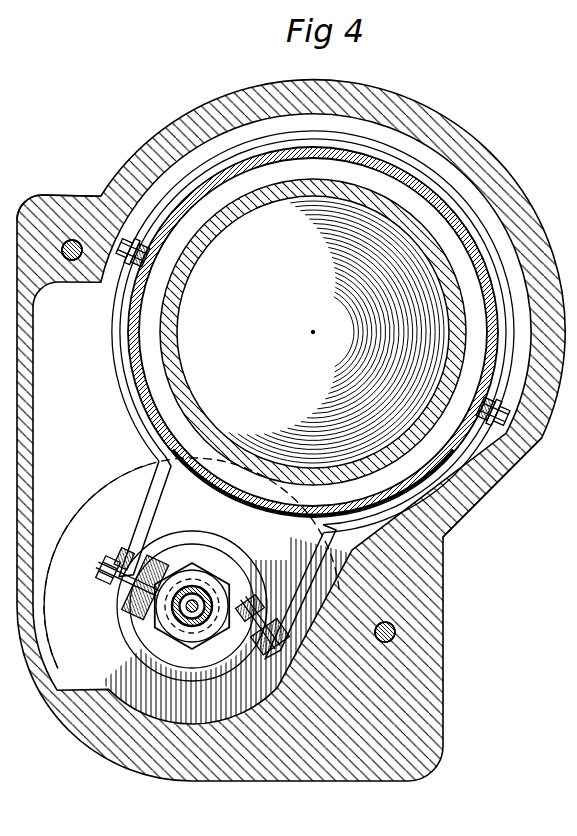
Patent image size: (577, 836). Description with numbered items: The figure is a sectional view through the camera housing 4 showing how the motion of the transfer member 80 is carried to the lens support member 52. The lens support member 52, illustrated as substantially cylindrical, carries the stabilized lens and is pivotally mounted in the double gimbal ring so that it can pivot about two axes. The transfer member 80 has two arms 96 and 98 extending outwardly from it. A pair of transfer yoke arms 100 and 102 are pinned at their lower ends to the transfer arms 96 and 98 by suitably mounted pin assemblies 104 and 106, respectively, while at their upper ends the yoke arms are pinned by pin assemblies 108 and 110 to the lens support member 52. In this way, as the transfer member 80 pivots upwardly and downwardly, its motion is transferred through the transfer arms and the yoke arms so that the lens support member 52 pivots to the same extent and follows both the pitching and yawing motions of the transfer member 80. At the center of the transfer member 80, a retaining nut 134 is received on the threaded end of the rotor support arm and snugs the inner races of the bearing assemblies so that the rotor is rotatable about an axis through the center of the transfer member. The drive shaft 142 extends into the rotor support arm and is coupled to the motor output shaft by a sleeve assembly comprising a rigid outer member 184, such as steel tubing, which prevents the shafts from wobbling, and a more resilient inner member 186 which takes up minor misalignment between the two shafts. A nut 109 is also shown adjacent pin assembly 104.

The housing 4 is at (444, 600).
The lens support member 52 is at (463, 220).
The transfer member 80 is at (147, 650).
The transfer arm 96 is at (120, 625).
The transfer arm 98 is at (226, 624).
The transfer yoke arm 100 is at (151, 470).
The transfer yoke arm 102 is at (428, 492).
The pin assembly 104 is at (108, 590).
The pin assembly 106 is at (242, 655).
The pin assembly 108 is at (101, 194).
The nut 109 is at (103, 565).
The pin assembly 110 is at (527, 452).
The retaining nut 134 is at (185, 567).
The drive shaft 142 is at (188, 632).
The rigid outer member 184 is at (200, 584).
The inner member 186 is at (214, 582).